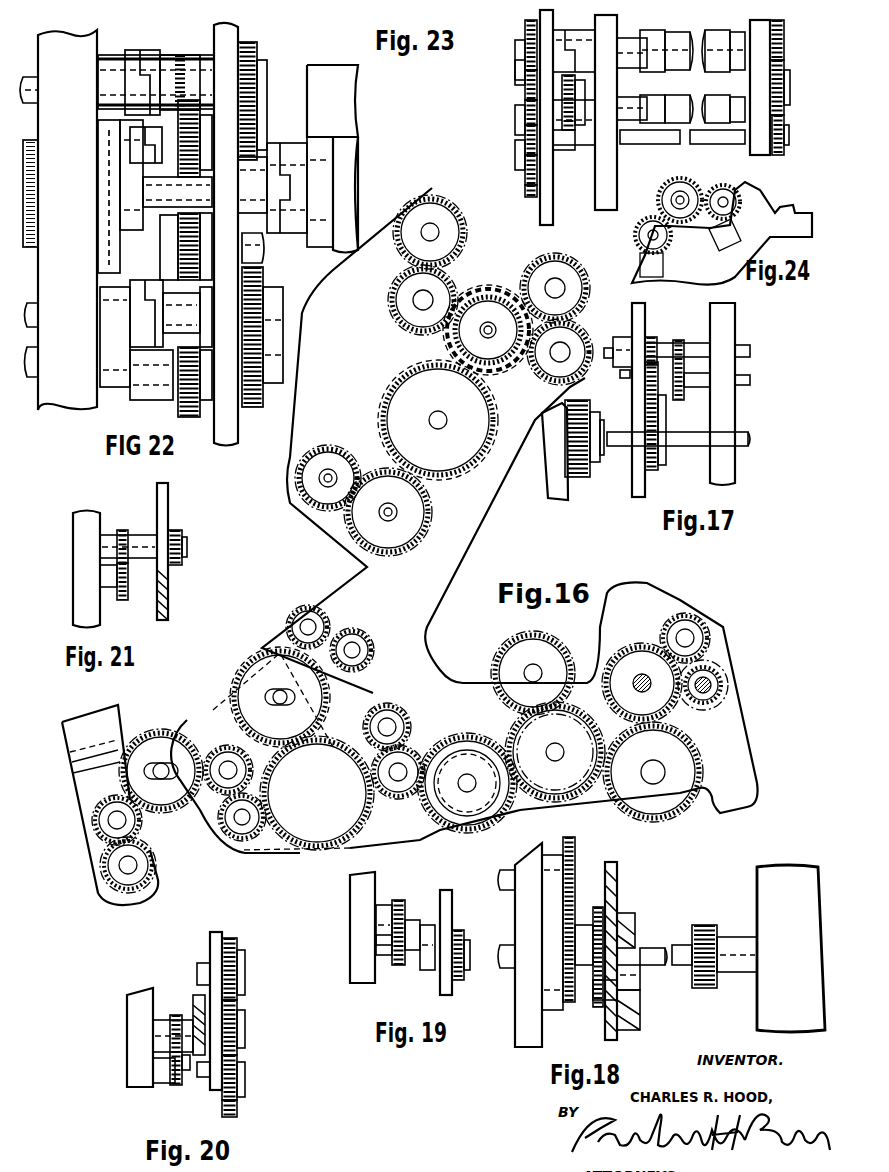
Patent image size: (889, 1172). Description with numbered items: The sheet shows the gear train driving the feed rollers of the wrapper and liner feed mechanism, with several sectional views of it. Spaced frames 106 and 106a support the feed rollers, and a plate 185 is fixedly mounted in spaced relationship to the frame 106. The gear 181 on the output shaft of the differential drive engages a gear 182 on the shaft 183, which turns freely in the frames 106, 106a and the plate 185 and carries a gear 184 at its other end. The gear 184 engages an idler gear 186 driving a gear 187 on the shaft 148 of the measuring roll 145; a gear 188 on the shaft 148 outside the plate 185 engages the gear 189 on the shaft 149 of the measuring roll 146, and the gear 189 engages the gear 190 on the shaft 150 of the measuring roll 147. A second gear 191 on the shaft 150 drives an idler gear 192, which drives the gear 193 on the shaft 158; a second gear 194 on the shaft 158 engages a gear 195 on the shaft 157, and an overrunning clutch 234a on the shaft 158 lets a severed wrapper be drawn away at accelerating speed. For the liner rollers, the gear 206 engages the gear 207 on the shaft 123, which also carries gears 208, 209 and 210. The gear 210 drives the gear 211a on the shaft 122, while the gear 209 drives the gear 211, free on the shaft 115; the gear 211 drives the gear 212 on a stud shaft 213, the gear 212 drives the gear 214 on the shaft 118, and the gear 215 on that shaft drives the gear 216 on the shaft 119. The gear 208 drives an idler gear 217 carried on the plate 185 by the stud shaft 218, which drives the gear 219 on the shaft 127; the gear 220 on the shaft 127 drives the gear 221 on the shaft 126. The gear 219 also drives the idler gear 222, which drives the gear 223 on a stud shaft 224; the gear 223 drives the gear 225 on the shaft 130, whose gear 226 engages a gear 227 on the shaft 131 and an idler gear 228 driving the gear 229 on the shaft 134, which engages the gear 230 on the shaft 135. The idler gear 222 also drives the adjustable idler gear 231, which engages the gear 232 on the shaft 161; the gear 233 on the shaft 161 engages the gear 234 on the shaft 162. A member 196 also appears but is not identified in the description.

In FIG. 22, the frame 106 is at (70, 405).
In FIG. 23, the frame 106 is at (600, 160).
In FIG. 17, the frame 106 is at (733, 318).
In FIG. 16, the frame 106 is at (425, 170).
In FIG. 21, the frame 106 is at (73, 530).
In FIG. 20, the frame 106 is at (127, 1003).
In FIG. 19, the frame 106 is at (350, 893).
In FIG. 18, the frame 106 is at (515, 1040).
In FIG. 23, the frame 106a is at (752, 28).
In FIG. 24, the frame 106a is at (716, 265).
In FIG. 17, the shaft 115 is at (618, 447).
In FIG. 16, the shaft 115 is at (665, 771).
In FIG. 17, the shaft 118 is at (750, 352).
In FIG. 16, the shaft 118 is at (695, 632).
In FIG. 17, the shaft 119 is at (750, 380).
In FIG. 16, the shaft 119 is at (710, 683).
In FIG. 16, the shaft 122 is at (545, 665).
In FIG. 18, the shaft 122 is at (500, 878).
In FIG. 16, the shaft 123 is at (556, 748).
In FIG. 18, the shaft 123 is at (503, 945).
In FIG. 16, the shaft 126 is at (392, 722).
In FIG. 19, the shaft 126 is at (380, 918).
In FIG. 16, the shaft 127 is at (398, 772).
In FIG. 19, the shaft 127 is at (380, 958).
In FIG. 16, the shaft 130 is at (232, 770).
In FIG. 20, the shaft 130 is at (160, 1020).
In FIG. 20, the shaft 131 is at (153, 1070).
In FIG. 16, the shaft 134 is at (117, 820).
In FIG. 16, the shaft 135 is at (128, 865).
In FIG. 23, the measuring roll 145 is at (668, 36).
In FIG. 23, the measuring roll 146 is at (665, 75).
In FIG. 23, the measuring roll 147 is at (702, 90).
In FIG. 23, the shaft 148 is at (630, 38).
In FIG. 24, the shaft 148 is at (723, 202).
In FIG. 16, the shaft 148 is at (421, 240).
In FIG. 23, the shaft 149 is at (518, 72).
In FIG. 16, the shaft 149 is at (410, 300).
In FIG. 23, the shaft 150 is at (630, 97).
In FIG. 16, the shaft 150 is at (491, 322).
In FIG. 16, the shaft 157 is at (325, 480).
In FIG. 16, the shaft 158 is at (400, 512).
In FIG. 16, the shaft 161 is at (312, 620).
In FIG. 21, the shaft 161 is at (133, 535).
In FIG. 16, the shaft 162 is at (360, 650).
In FIG. 21, the shaft 162 is at (100, 582).
In FIG. 23, the gear 181 is at (525, 190).
In FIG. 16, the gear 181 is at (545, 375).
In FIG. 23, the gear 182 is at (520, 152).
In FIG. 16, the gear 182 is at (580, 265).
In FIG. 23, the shaft 183 is at (638, 144).
In FIG. 16, the shaft 183 is at (565, 288).
In FIG. 23, the gear 184 is at (784, 130).
In FIG. 24, the gear 184 is at (636, 225).
In FIG. 22, the plate 185 is at (238, 38).
In FIG. 23, the plate 185 is at (542, 24).
In FIG. 17, the plate 185 is at (645, 308).
In FIG. 16, the plate 185 is at (470, 262).
In FIG. 21, the plate 185 is at (168, 495).
In FIG. 20, the plate 185 is at (222, 935).
In FIG. 19, the plate 185 is at (446, 890).
In FIG. 18, the plate 185 is at (613, 862).
In FIG. 23, the idler gear 186 is at (784, 72).
In FIG. 24, the idler gear 186 is at (686, 180).
In FIG. 23, the gear 187 is at (782, 40).
In FIG. 24, the gear 187 is at (735, 190).
In FIG. 23, the gear 188 is at (525, 28).
In FIG. 16, the gear 188 is at (462, 232).
In FIG. 22, the gear 189 is at (260, 55).
In FIG. 23, the gear 189 is at (525, 95).
In FIG. 16, the gear 189 is at (392, 318).
In FIG. 22, the gear 190 is at (262, 140).
In FIG. 23, the gear 190 is at (525, 115).
In FIG. 16, the gear 190 is at (494, 347).
In FIG. 22, the second gear 191 is at (188, 160).
In FIG. 23, the second gear 191 is at (575, 90).
In FIG. 16, the second gear 191 is at (478, 282).
In FIG. 22, the idler gear 192 is at (178, 250).
In FIG. 16, the idler gear 192 is at (380, 378).
In FIG. 22, the gear 193 is at (183, 402).
In FIG. 16, the gear 193 is at (432, 493).
In FIG. 22, the second gear 194 is at (252, 410).
In FIG. 16, the second gear 194 is at (425, 538).
In FIG. 22, the gear 195 is at (262, 283).
In FIG. 16, the gear 195 is at (330, 445).
In FIG. 17, the motor housing 196 is at (548, 490).
In FIG. 18, the motor housing 196 is at (791, 948).
In FIG. 17, the gear 206 is at (576, 482).
In FIG. 18, the gear 207 is at (705, 925).
In FIG. 16, the gear 208 is at (590, 688).
In FIG. 18, the gear 208 is at (630, 913).
In FIG. 16, the gear 209 is at (550, 810).
In FIG. 18, the gear 209 is at (593, 925).
In FIG. 16, the gear 210 is at (525, 735).
In FIG. 18, the gear 210 is at (569, 1002).
In FIG. 17, the gear 211 is at (660, 465).
In FIG. 16, the gear 211 is at (675, 815).
In FIG. 16, the gear 211a is at (526, 655).
In FIG. 18, the gear 211a is at (575, 845).
In FIG. 17, the gear 212 is at (625, 395).
In FIG. 16, the gear 212 is at (630, 640).
In FIG. 17, the stud shaft 213 is at (625, 382).
In FIG. 16, the stud shaft 213 is at (650, 683).
In FIG. 17, the gear 214 is at (653, 337).
In FIG. 16, the gear 214 is at (710, 625).
In FIG. 17, the gear 215 is at (682, 340).
In FIG. 17, the gear 216 is at (684, 398).
In FIG. 16, the gear 216 is at (725, 690).
In FIG. 16, the idler gear 217 is at (467, 750).
In FIG. 18, the idler gear 217 is at (640, 1030).
In FIG. 16, the stud shaft 218 is at (467, 783).
In FIG. 18, the stud shaft 218 is at (640, 990).
In FIG. 16, the gear 219 is at (405, 762).
In FIG. 19, the gear 219 is at (458, 980).
In FIG. 19, the gear 220 is at (410, 965).
In FIG. 16, the gear 221 is at (393, 710).
In FIG. 19, the gear 221 is at (398, 900).
In FIG. 16, the idler gear 222 is at (340, 840).
In FIG. 20, the idler gear 222 is at (238, 1108).
In FIG. 16, the gear 223 is at (245, 828).
In FIG. 20, the gear 223 is at (240, 1070).
In FIG. 16, the stud shaft 224 is at (248, 848).
In FIG. 20, the stud shaft 224 is at (203, 1077).
In FIG. 16, the gear 225 is at (222, 745).
In FIG. 20, the gear 225 is at (238, 1022).
In FIG. 20, the gear 226 is at (176, 1015).
In FIG. 20, the gear 227 is at (176, 1085).
In FIG. 16, the idler gear 228 is at (150, 735).
In FIG. 16, the gear 229 is at (100, 822).
In FIG. 16, the gear 230 is at (108, 872).
In FIG. 16, the idler gear 231 is at (243, 660).
In FIG. 20, the idler gear 231 is at (238, 945).
In FIG. 16, the gear 232 is at (305, 612).
In FIG. 21, the gear 232 is at (182, 530).
In FIG. 21, the gear 233 is at (120, 530).
In FIG. 16, the gear 234 is at (363, 633).
In FIG. 21, the gear 234 is at (122, 600).
In FIG. 22, the overrunning clutch 234a is at (132, 400).